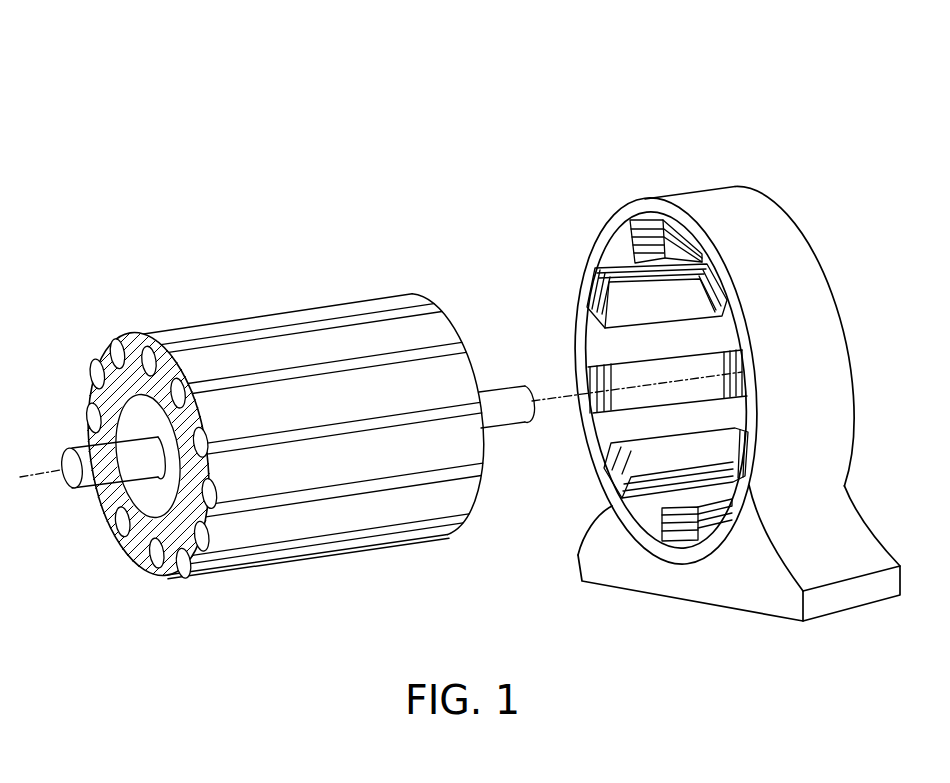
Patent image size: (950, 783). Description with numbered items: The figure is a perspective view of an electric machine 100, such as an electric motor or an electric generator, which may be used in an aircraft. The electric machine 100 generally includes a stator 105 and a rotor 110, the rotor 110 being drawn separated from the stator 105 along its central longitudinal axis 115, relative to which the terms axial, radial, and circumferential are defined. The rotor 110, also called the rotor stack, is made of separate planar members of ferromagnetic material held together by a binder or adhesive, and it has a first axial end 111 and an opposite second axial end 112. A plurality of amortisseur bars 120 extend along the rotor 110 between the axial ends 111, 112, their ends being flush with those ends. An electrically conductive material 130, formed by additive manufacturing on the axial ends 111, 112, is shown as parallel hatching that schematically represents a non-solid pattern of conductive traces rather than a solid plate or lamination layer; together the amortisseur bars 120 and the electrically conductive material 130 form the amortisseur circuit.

The electric machine 100 is at (140, 62).
The stator 105 is at (600, 196).
The rotor 110 is at (238, 296).
The first axial end 111 is at (78, 387).
The second axial end 112 is at (480, 332).
The central longitudinal axis 115 is at (20, 477).
The amortisseur bars 120 is at (166, 568).
The electrically conductive material 130 is at (100, 431).